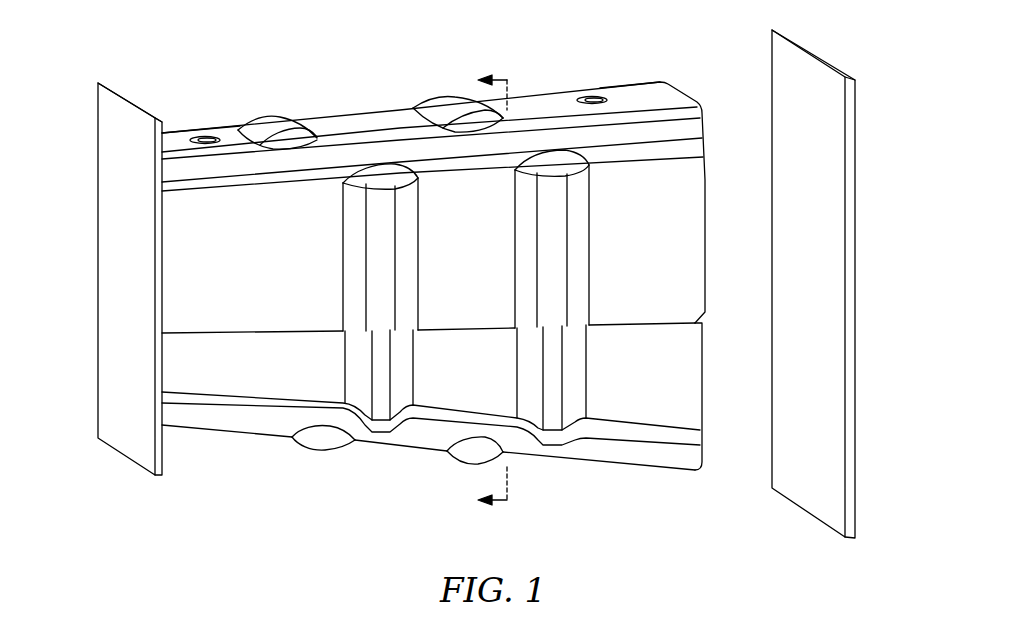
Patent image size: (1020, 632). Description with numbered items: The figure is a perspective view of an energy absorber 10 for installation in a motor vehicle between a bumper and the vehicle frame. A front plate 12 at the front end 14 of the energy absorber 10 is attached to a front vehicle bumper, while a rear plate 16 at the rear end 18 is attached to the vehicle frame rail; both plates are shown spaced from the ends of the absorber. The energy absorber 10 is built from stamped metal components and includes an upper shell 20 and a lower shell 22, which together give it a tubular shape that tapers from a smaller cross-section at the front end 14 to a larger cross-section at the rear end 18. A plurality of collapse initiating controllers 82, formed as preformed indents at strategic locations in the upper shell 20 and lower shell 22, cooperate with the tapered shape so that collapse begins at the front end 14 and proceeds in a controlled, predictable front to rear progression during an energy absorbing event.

The energy absorber 10 is at (327, 110).
The front plate 12 is at (115, 235).
The front end 14 is at (187, 138).
The rear plate 16 is at (793, 163).
The rear end 18 is at (635, 88).
The upper shell 20 is at (353, 117).
The lower shell 22 is at (247, 427).
The collapse initiating controllers 82 is at (270, 125).